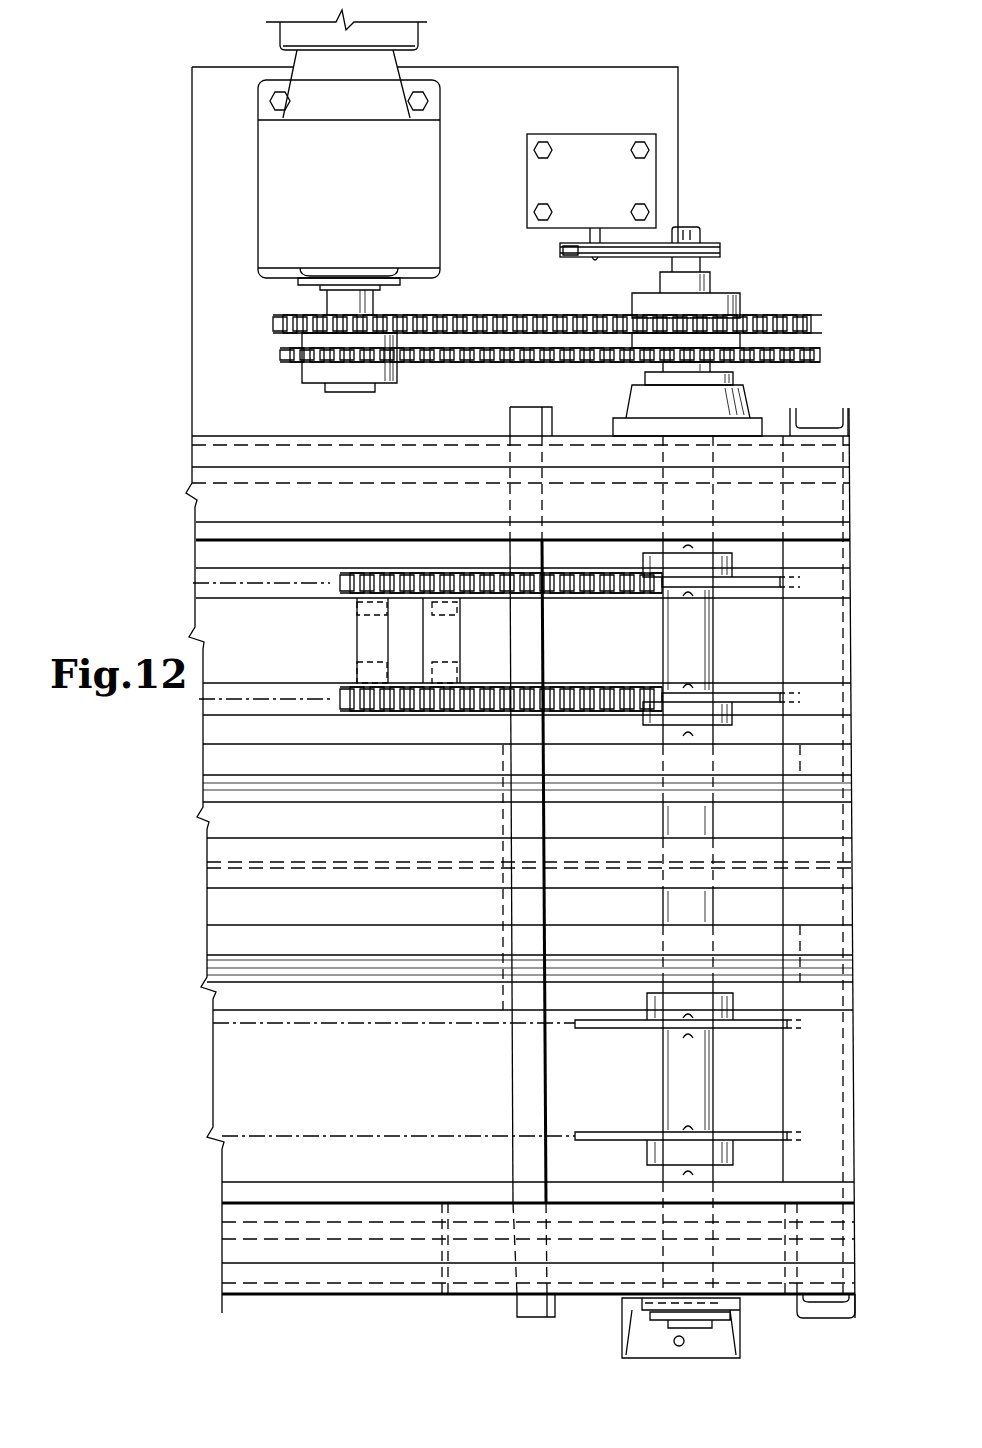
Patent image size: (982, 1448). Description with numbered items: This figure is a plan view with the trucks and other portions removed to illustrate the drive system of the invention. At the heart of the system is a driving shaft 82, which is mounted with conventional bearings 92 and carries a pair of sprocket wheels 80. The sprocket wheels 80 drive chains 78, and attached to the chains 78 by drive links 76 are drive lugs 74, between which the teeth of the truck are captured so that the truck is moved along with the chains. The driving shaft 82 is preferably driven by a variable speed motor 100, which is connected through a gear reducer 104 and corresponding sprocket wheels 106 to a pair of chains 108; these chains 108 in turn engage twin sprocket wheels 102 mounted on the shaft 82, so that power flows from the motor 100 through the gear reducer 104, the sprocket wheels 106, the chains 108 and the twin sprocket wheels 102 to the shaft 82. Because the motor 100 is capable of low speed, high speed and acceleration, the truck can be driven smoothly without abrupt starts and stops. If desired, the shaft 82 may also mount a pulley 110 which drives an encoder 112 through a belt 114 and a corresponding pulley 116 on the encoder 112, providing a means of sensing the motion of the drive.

The variable speed motor 100 is at (416, 32).
The gear reducer 104 is at (427, 145).
The encoder 112 is at (587, 142).
The pulley 110 is at (712, 238).
The belt 114 is at (722, 250).
The pulley 116 is at (568, 258).
The sprocket wheels 106 is at (282, 347).
The chains 108 is at (822, 353).
The twin sprocket wheels 102 is at (780, 330).
The bearings 92 is at (633, 400).
The sprocket wheels 80 is at (590, 1105).
The driving shaft 82 is at (707, 1075).
The chains 78 is at (608, 683).
The drive lugs 74 is at (450, 638).
The drive links 76 is at (450, 670).